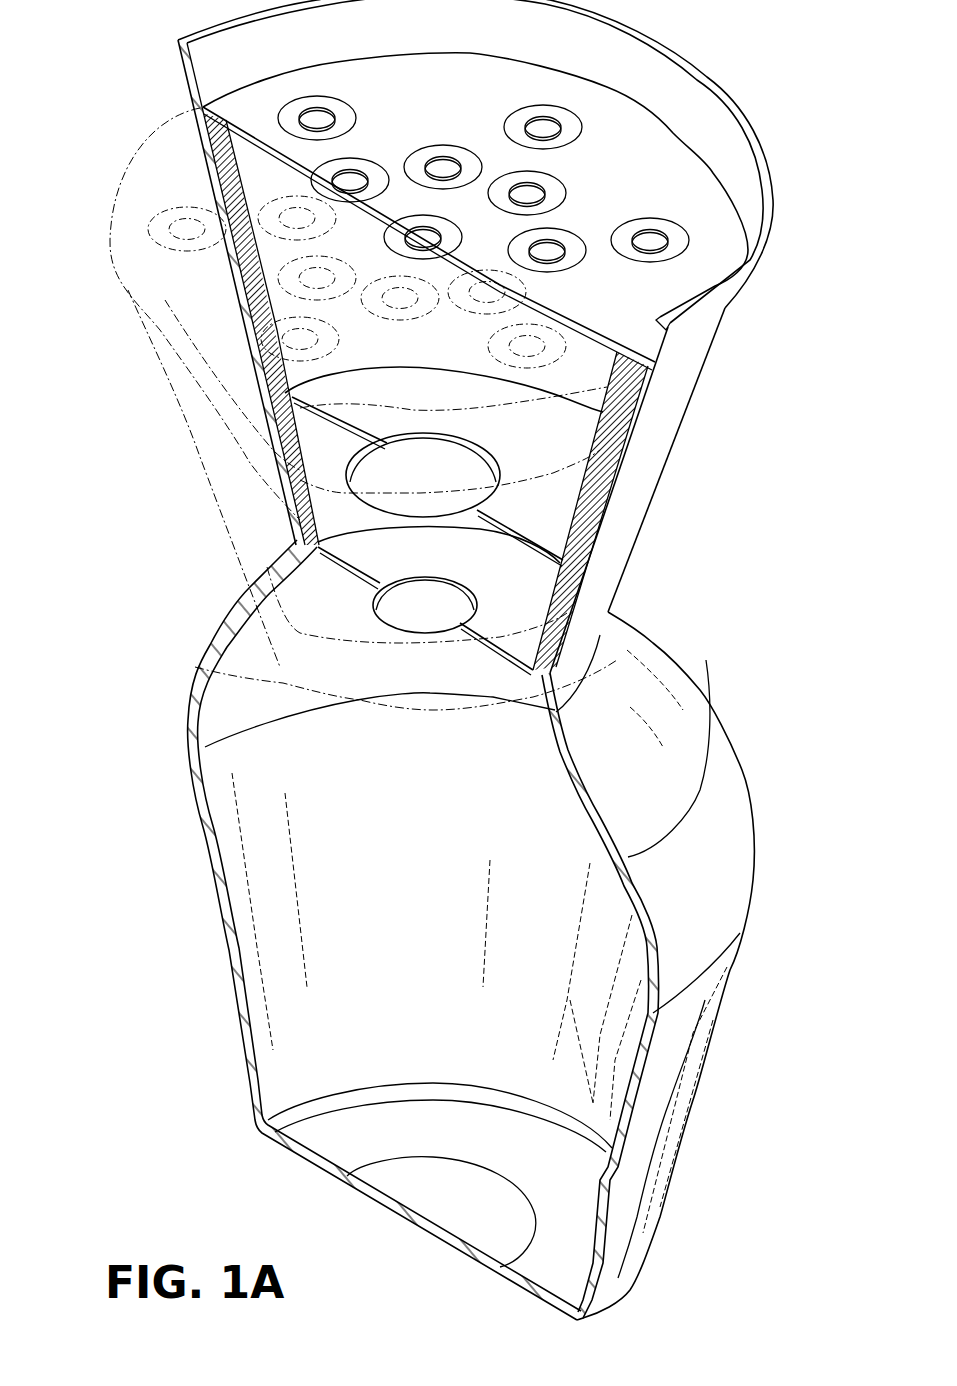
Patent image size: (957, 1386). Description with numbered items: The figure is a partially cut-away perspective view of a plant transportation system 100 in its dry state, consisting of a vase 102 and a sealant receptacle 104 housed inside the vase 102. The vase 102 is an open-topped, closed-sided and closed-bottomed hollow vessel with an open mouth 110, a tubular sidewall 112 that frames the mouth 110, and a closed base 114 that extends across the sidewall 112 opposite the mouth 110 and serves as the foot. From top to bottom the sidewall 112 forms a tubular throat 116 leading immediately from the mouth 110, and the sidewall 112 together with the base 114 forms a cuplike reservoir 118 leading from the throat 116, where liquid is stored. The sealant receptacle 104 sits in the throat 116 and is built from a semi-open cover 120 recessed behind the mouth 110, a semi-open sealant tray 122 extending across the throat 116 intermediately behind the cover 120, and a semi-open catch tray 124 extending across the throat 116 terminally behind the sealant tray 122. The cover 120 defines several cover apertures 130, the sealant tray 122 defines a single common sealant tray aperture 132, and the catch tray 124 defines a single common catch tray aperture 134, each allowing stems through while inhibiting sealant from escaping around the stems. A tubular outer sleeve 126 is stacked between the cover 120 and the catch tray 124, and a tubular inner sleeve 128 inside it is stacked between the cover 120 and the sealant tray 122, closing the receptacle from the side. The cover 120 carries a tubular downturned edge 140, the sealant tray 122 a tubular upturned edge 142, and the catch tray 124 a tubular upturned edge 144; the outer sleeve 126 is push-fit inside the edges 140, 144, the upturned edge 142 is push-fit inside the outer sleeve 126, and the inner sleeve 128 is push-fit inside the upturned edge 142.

The plant transportation system 100 is at (528, 930).
The vase 102 is at (457, 337).
The sealant receptacle 104 is at (716, 167).
The open mouth 110 is at (708, 210).
The tubular sidewall 112 is at (642, 520).
The closed base 114 is at (632, 1285).
The tubular throat 116 is at (660, 475).
The cuplike reservoir 118 is at (725, 723).
The cover 120 is at (185, 45).
The sealant tray 122 is at (325, 462).
The catch tray 124 is at (304, 601).
The outer sleeve 126 is at (304, 597).
The inner sleeve 128 is at (306, 454).
The cover apertures 130 is at (307, 123).
The sealant tray aperture 132 is at (407, 450).
The catch tray aperture 134 is at (407, 593).
The downturned edge 140 is at (211, 173).
The upturned edge 142 is at (262, 318).
The upturned edge 144 is at (303, 481).